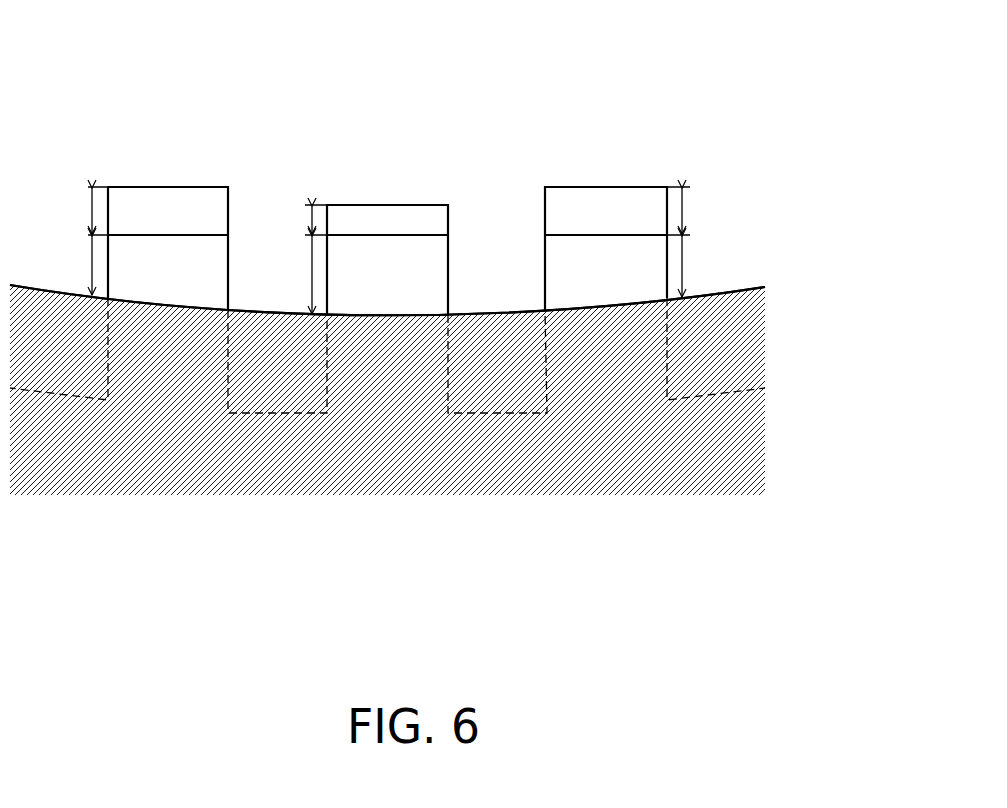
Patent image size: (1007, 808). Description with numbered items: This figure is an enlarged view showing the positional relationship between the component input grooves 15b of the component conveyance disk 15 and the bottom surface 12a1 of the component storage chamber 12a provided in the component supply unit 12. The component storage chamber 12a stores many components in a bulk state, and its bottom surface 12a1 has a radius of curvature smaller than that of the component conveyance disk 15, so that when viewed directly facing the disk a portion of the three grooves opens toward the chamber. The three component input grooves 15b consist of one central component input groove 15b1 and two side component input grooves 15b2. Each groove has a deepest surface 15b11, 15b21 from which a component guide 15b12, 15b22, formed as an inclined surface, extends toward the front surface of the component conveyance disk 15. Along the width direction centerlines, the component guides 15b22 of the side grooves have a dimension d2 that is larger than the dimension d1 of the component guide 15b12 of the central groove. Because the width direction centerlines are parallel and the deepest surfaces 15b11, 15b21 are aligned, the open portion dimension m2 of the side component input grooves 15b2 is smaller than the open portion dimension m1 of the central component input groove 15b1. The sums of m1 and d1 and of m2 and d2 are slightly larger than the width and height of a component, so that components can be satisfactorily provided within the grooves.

The component supply unit 12 is at (753, 438).
The component storage chamber 12a is at (387, 300).
The bottom surface 12a1 is at (742, 287).
The component conveyance disk 15 is at (405, 357).
The component input grooves 15b is at (405, 385).
The central component input groove 15b1 is at (403, 347).
The side component input grooves 15b2 is at (405, 347).
The deepest surface 15b11 is at (388, 233).
The component guide 15b12 is at (355, 222).
The deepest surfaces 15b21 is at (168, 233).
The component guides 15b22 is at (138, 205).
The dimension of component guide d1 is at (298, 221).
The dimension of component guides d2 is at (386, 211).
The dimension of open portion m1 is at (291, 275).
The dimension of open portions m2 is at (386, 266).